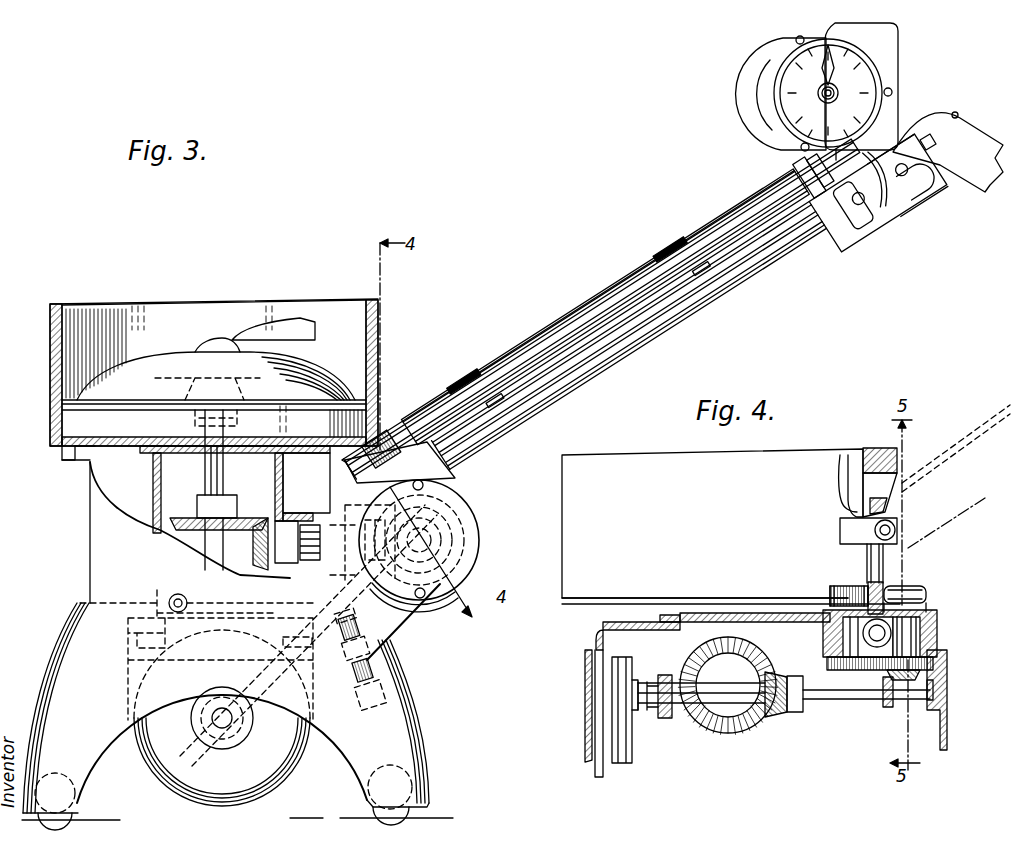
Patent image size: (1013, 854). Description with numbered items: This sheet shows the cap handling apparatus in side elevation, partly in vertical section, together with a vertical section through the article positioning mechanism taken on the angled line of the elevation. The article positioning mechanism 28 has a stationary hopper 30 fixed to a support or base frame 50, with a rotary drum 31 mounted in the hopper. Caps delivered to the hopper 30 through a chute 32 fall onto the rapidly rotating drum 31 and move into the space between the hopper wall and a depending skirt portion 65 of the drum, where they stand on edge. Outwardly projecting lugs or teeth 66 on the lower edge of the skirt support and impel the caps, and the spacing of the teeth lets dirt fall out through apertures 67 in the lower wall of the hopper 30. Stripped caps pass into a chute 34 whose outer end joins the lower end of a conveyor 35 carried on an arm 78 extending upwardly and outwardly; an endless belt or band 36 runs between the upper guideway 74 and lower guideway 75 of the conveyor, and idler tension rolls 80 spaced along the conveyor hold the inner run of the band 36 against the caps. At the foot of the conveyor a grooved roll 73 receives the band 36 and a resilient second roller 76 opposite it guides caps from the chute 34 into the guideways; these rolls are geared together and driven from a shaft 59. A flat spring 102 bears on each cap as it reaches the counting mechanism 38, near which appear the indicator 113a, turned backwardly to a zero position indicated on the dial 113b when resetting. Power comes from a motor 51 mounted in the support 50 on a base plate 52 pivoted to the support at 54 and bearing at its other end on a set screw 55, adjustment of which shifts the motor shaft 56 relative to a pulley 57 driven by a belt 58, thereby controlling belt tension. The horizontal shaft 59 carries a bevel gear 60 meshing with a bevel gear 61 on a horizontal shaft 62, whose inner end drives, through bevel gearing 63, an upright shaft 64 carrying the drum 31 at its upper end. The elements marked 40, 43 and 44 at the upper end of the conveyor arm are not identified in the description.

In FIG. 3, the article positioning mechanism 28 is at (50, 330).
In FIG. 4, the article positioning mechanism 28 is at (612, 618).
In FIG. 3, the stationary hopper 30 is at (50, 395).
In FIG. 4, the stationary hopper 30 is at (600, 470).
In FIG. 3, the rotary drum 31 is at (330, 378).
In FIG. 3, the chute 32 is at (268, 326).
In FIG. 4, the chute 32 is at (900, 466).
In FIG. 4, the chute 34 is at (880, 550).
In FIG. 3, the conveyor 35 is at (592, 285).
In FIG. 3, the endless belt or band 36 is at (587, 283).
In FIG. 4, the endless belt or band 36 is at (925, 597).
In FIG. 3, the counting mechanism 38 is at (748, 108).
In FIG. 3, the mounting block 40 is at (892, 204).
In FIG. 3, the bracket plate 43 is at (930, 120).
In FIG. 3, the bracket arm 44 is at (934, 182).
In FIG. 3, the support or base frame 50 is at (105, 553).
In FIG. 4, the support or base frame 50 is at (947, 668).
In FIG. 3, the motor 51 is at (196, 780).
In FIG. 3, the base plate 52 is at (255, 626).
In FIG. 3, the pivot 54 is at (187, 602).
In FIG. 3, the set screw 55 is at (370, 676).
In FIG. 3, the motor shaft 56 is at (205, 740).
In FIG. 3, the pulley 57 is at (466, 520).
In FIG. 3, the belt 58 is at (340, 672).
In FIG. 4, the belt 58 is at (632, 755).
In FIG. 3, the shaft 59 is at (428, 530).
In FIG. 4, the shaft 59 is at (830, 700).
In FIG. 3, the bevel gear 60 is at (440, 545).
In FIG. 4, the bevel gear 60 is at (775, 720).
In FIG. 3, the bevel gear 61 is at (410, 590).
In FIG. 4, the bevel gear 61 is at (712, 730).
In FIG. 3, the horizontal shaft 62 is at (305, 540).
In FIG. 3, the bevel gearing 63 is at (262, 518).
In FIG. 3, the upright shaft 64 is at (205, 470).
In FIG. 3, the skirt portion 65 is at (85, 420).
In FIG. 3, the lugs or teeth 66 is at (130, 436).
In FIG. 3, the apertures 67 is at (72, 458).
In FIG. 4, the roll 73 is at (905, 588).
In FIG. 3, the upper guideway 74 is at (542, 276).
In FIG. 4, the upper guideway 74 is at (884, 585).
In FIG. 3, the lower guideway 75 is at (638, 348).
In FIG. 3, the second roller 76 is at (354, 428).
In FIG. 4, the second roller 76 is at (845, 585).
In FIG. 3, the arm 78 is at (655, 375).
In FIG. 4, the arm 78 is at (940, 625).
In FIG. 3, the idler tension rolls 80 is at (556, 291).
In FIG. 3, the flat spring 102 is at (767, 170).
In FIG. 3, the indicator 113a is at (840, 50).
In FIG. 3, the dial 113b is at (795, 70).